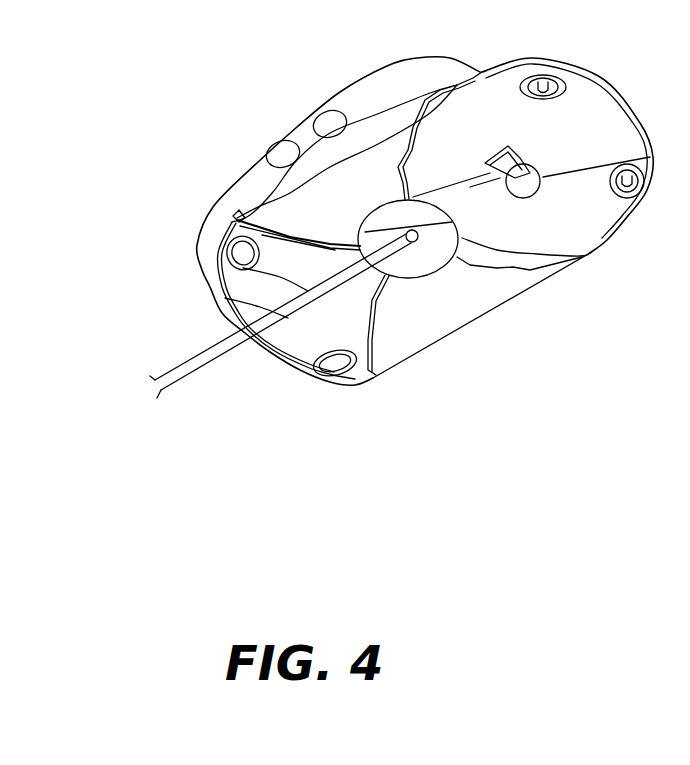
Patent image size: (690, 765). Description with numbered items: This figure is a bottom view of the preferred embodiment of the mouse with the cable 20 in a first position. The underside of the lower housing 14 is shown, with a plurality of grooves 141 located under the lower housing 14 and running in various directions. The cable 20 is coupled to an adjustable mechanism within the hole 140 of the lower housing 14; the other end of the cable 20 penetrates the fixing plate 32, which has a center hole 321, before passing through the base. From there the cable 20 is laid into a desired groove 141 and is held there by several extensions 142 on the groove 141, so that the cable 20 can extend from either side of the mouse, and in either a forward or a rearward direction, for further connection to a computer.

The lower housing 14 is at (380, 80).
The extensions 142 is at (307, 240).
The grooves 141 is at (235, 181).
The cable 20 is at (197, 362).
The hole 140 is at (410, 277).
The fixing plate 32 is at (433, 266).
The center hole 321 is at (590, 253).